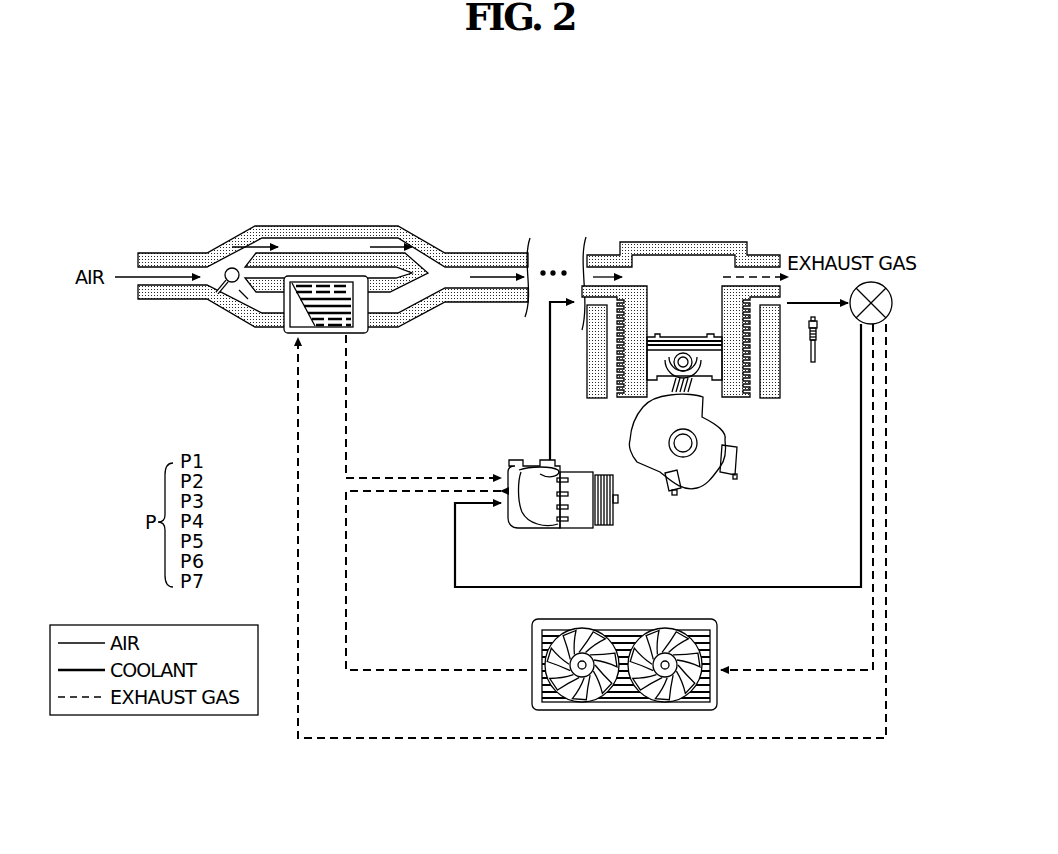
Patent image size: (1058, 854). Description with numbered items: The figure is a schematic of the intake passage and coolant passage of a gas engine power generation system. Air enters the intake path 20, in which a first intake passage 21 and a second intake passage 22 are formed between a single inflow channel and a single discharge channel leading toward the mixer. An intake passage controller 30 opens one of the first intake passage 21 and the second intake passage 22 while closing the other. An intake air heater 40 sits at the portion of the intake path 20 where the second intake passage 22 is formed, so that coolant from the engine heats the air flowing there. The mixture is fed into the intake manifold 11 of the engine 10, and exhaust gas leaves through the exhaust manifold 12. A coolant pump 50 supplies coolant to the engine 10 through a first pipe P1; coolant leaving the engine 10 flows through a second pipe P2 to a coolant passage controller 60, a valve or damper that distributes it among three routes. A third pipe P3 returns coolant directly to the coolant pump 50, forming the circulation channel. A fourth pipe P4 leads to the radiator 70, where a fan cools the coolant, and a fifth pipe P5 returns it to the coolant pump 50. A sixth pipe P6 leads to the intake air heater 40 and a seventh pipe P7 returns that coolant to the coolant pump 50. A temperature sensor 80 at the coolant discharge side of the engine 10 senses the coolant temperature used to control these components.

The engine 10 is at (680, 236).
The intake manifold 11 is at (603, 262).
The exhaust manifold 12 is at (769, 262).
The intake path 20 is at (298, 220).
The first intake passage 21 is at (340, 247).
The second intake passage 22 is at (244, 295).
The intake passage controller 30 is at (227, 268).
The intake air heater 40 is at (302, 322).
The coolant pump 50 is at (537, 510).
The coolant passage controller 60 is at (892, 300).
The radiator 70 is at (627, 710).
The temperature sensor 80 is at (814, 362).
The first pipe P1 is at (550, 393).
The second pipe P2 is at (800, 303).
The third pipe P3 is at (861, 480).
The fourth pipe P4 is at (873, 425).
The fifth pipe P5 is at (346, 570).
The sixth pipe P6 is at (886, 377).
The seventh pipe P7 is at (346, 413).